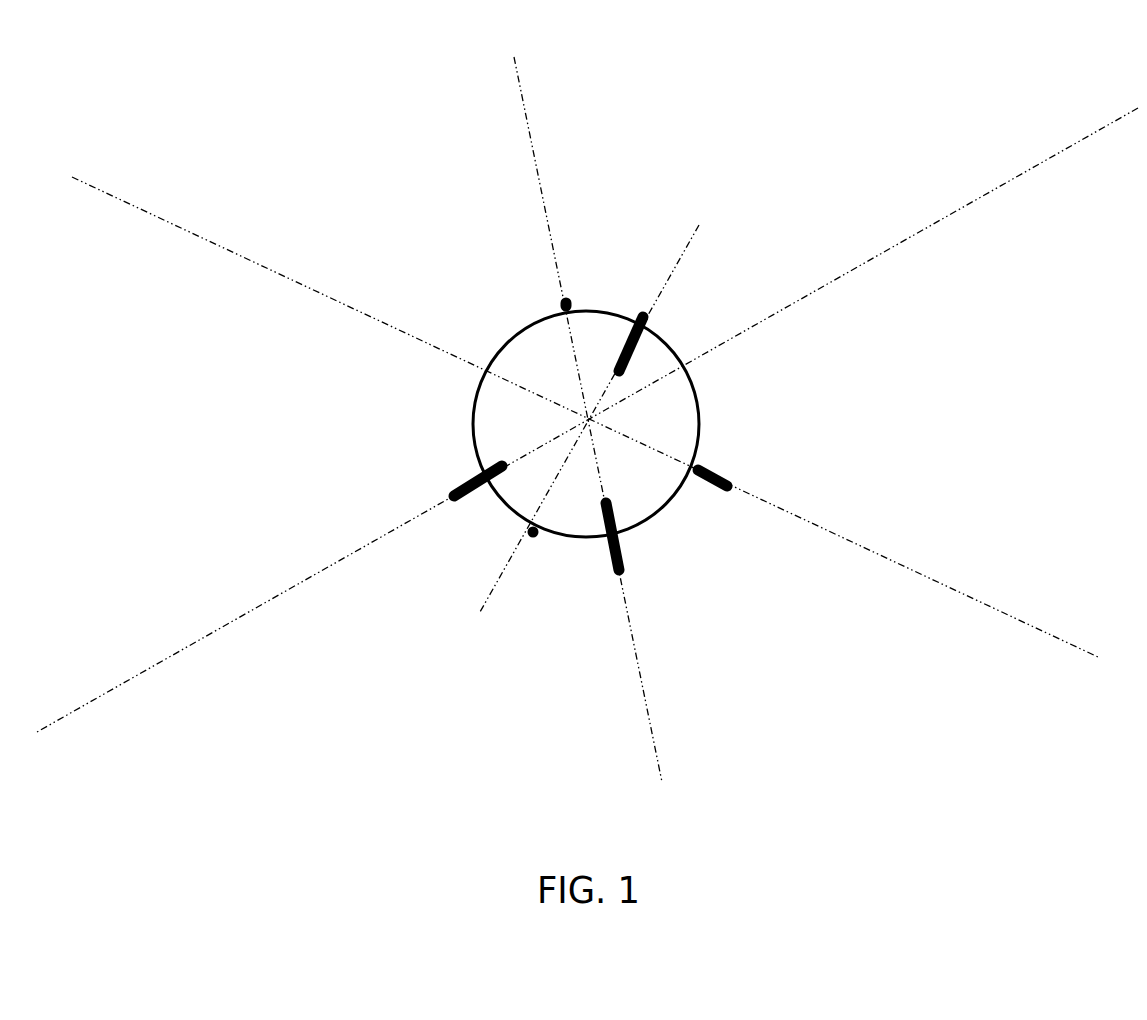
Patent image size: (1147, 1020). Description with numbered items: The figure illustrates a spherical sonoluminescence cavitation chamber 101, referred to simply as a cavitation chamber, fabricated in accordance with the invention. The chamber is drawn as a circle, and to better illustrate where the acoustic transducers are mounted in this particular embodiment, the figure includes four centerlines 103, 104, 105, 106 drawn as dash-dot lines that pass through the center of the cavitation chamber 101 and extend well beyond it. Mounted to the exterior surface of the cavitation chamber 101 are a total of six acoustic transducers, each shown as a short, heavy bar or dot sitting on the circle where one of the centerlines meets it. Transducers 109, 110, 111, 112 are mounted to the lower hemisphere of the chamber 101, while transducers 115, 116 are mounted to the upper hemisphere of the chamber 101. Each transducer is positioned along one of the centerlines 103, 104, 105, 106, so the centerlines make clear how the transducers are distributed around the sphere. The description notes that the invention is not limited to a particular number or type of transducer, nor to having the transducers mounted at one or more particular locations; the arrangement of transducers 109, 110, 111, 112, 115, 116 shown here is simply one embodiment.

The spherical sonoluminescence cavitation chamber 101 is at (446, 442).
The centerline 103 is at (318, 573).
The centerline 104 is at (502, 575).
The centerline 105 is at (657, 753).
The centerline 106 is at (1017, 622).
The acoustic transducer 109 is at (463, 484).
The acoustic transducer 110 is at (537, 536).
The acoustic transducer 111 is at (620, 538).
The acoustic transducer 112 is at (713, 472).
The acoustic transducer 115 is at (565, 295).
The acoustic transducer 116 is at (652, 307).